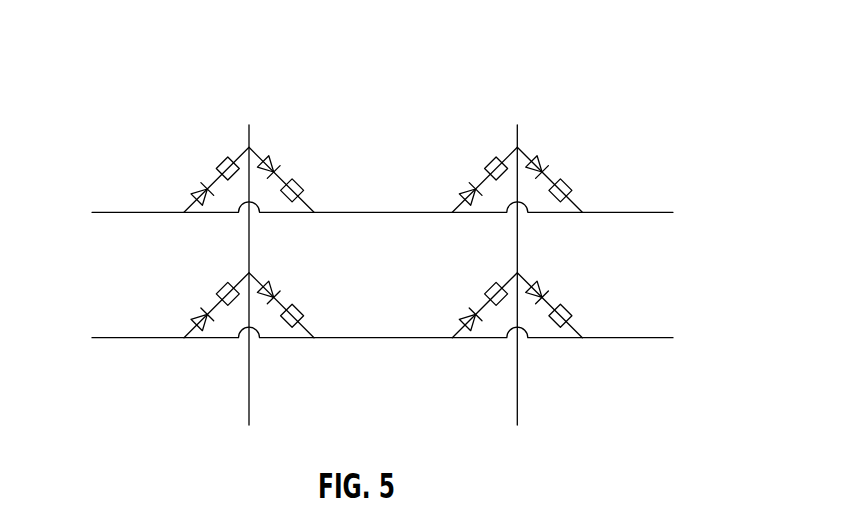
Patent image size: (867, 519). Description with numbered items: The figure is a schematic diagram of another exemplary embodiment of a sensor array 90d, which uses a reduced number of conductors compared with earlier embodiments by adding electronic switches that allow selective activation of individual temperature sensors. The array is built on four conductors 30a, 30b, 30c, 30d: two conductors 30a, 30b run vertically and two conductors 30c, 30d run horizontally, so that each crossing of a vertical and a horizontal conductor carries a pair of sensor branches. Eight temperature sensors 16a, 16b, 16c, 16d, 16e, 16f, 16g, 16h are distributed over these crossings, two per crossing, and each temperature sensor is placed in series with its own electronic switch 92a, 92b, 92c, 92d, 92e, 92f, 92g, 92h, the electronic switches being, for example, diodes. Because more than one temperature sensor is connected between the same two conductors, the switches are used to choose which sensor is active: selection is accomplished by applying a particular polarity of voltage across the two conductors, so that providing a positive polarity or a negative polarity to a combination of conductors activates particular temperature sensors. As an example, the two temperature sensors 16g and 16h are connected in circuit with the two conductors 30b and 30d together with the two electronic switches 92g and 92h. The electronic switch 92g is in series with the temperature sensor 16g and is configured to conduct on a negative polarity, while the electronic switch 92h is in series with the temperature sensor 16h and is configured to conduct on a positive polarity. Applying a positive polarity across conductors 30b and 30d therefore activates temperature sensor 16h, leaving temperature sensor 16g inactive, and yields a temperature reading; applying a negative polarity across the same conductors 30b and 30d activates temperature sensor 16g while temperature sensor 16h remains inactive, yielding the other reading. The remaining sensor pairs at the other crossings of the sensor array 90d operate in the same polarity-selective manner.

The sensor array 90d is at (608, 52).
The conductor 30a is at (250, 133).
The conductor 30b is at (518, 133).
The conductor 30c is at (110, 212).
The conductor 30d is at (110, 338).
The temperature sensor 16a is at (214, 144).
The temperature sensor 16b is at (324, 182).
The temperature sensor 16c is at (482, 144).
The temperature sensor 16d is at (592, 182).
The temperature sensor 16e is at (214, 270).
The temperature sensor 16f is at (325, 308).
The temperature sensor 16g is at (482, 270).
The temperature sensor 16h is at (592, 308).
The electronic switch 92a is at (168, 184).
The electronic switch 92b is at (301, 151).
The electronic switch 92c is at (436, 184).
The electronic switch 92d is at (570, 151).
The electronic switch 92e is at (168, 310).
The electronic switch 92f is at (301, 277).
The electronic switch 92g is at (436, 310).
The electronic switch 92h is at (570, 277).